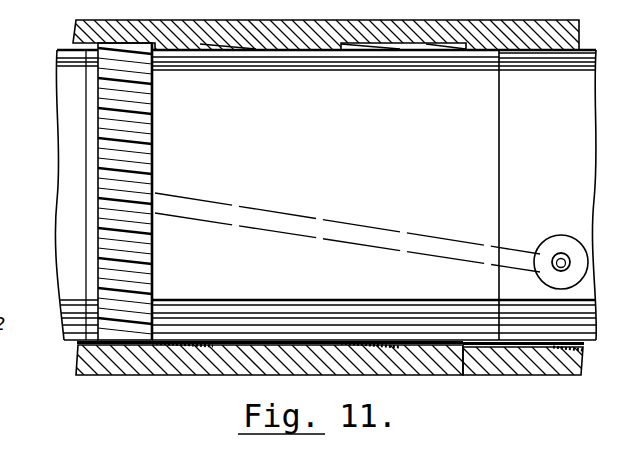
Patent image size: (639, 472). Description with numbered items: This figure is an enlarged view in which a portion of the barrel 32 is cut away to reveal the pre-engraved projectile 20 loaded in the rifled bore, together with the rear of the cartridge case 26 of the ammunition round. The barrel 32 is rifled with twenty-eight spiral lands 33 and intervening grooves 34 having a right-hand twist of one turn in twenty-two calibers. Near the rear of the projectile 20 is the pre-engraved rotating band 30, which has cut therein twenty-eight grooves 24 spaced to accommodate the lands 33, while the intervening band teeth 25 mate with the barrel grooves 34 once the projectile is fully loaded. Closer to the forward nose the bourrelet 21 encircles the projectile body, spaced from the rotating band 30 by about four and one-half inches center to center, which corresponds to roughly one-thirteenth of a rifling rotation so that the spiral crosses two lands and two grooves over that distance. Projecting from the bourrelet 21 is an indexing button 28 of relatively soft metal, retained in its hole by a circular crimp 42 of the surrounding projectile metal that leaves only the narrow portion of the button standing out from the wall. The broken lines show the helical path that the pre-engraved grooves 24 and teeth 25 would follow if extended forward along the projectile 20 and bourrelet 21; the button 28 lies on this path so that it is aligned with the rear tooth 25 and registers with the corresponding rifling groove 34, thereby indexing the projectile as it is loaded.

The pre-engraved projectile 20 is at (325, 195).
The bourrelet 21 is at (509, 130).
The grooves 24 is at (150, 180).
The band teeth 25 is at (143, 200).
The cartridge case 26 is at (68, 50).
The indexing button 28 is at (573, 267).
The rotating band 30 is at (152, 103).
The barrel 32 is at (582, 33).
The lands 33 is at (323, 347).
The grooves 34 is at (461, 350).
The circular crimp 42 is at (568, 250).